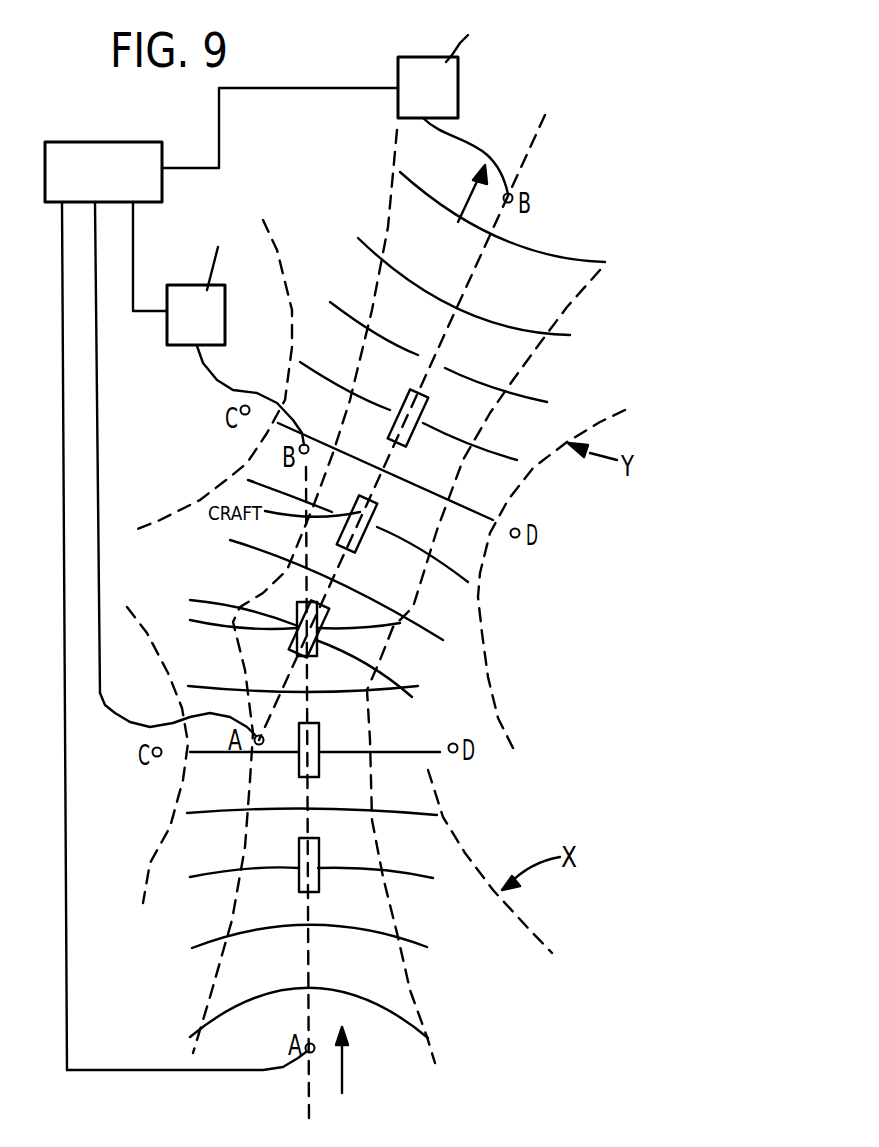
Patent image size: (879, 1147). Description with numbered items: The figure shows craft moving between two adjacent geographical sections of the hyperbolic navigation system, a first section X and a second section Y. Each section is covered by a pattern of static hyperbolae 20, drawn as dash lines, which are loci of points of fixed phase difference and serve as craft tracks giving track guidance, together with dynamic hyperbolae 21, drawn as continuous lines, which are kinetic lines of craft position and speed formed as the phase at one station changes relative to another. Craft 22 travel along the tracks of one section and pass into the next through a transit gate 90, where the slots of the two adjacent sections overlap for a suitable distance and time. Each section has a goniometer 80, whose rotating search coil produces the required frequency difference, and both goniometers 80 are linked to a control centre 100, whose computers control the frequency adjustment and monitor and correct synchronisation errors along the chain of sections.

The control centre 100 is at (103, 151).
The goniometer 80 is at (362, 229).
The static hyperbolae 20 is at (583, 310).
The dynamic hyperbolae 21 is at (570, 337).
The craft 22 is at (400, 430).
The transit gate 90 is at (325, 625).